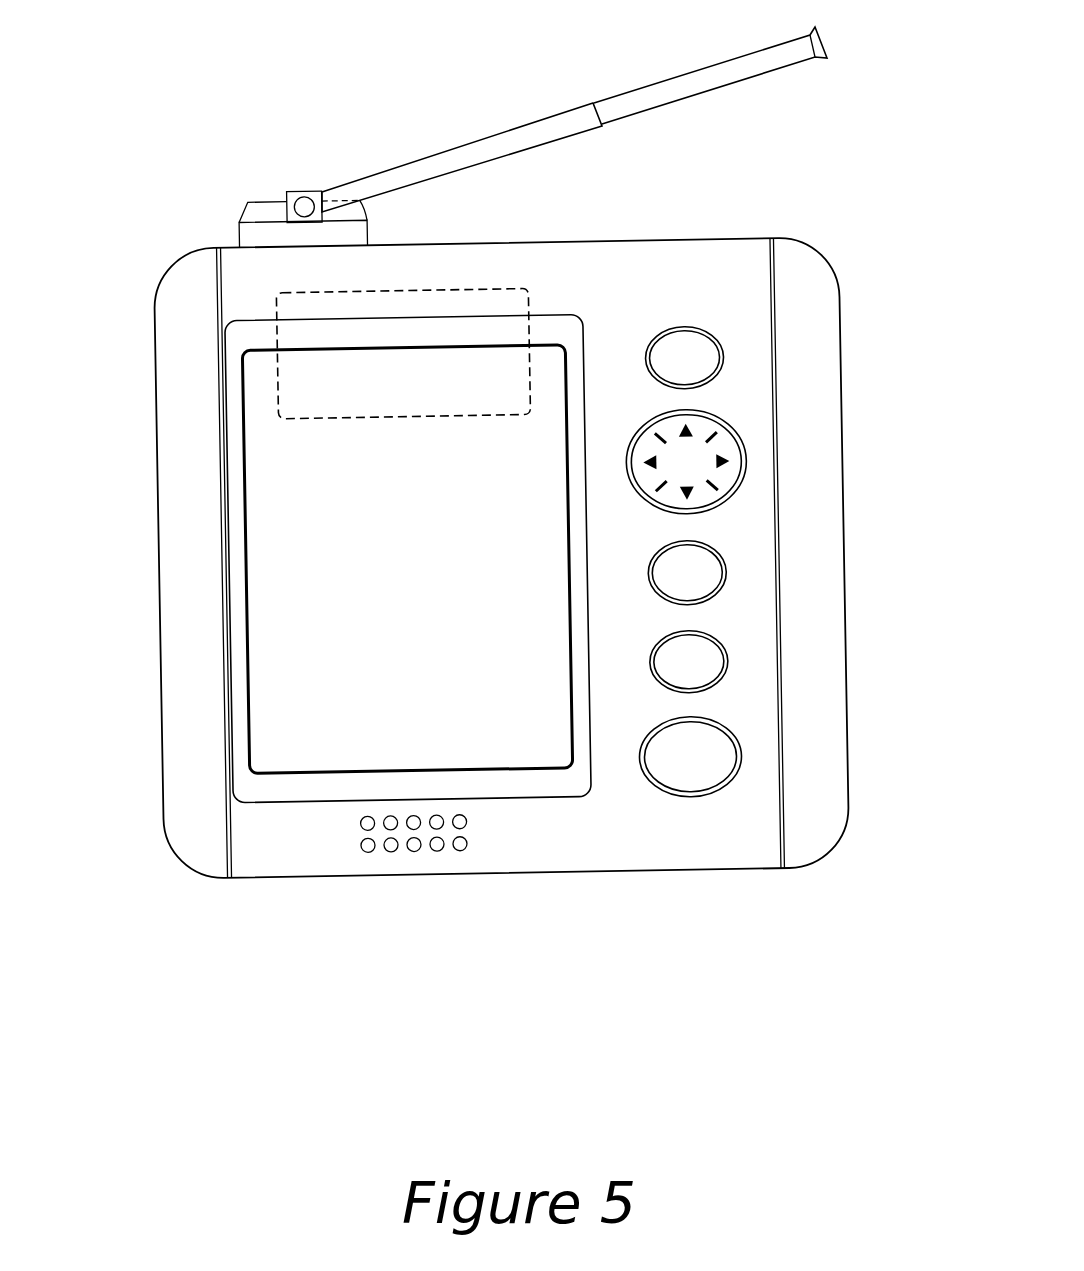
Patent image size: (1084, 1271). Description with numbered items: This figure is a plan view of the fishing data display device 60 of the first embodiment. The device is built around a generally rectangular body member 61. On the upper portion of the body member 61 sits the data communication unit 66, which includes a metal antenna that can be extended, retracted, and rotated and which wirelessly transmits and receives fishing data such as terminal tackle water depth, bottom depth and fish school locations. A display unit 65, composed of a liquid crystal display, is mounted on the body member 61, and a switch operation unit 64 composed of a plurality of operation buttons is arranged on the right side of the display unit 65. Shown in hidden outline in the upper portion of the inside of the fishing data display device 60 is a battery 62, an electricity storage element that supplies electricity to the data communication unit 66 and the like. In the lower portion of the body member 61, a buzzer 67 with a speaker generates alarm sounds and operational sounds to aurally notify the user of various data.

The fishing data display device 60 is at (753, 174).
The body member 61 is at (630, 262).
The battery 62 is at (277, 378).
The switch operation unit 64 is at (757, 573).
The display unit 65 is at (276, 665).
The data communication unit 66 is at (522, 137).
The buzzer 67 is at (420, 858).